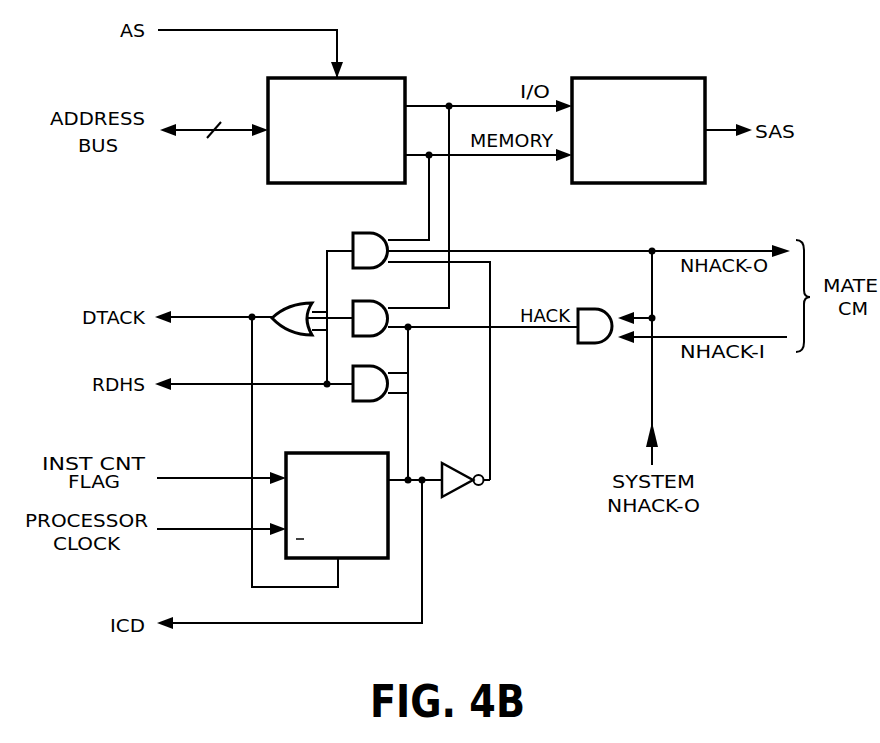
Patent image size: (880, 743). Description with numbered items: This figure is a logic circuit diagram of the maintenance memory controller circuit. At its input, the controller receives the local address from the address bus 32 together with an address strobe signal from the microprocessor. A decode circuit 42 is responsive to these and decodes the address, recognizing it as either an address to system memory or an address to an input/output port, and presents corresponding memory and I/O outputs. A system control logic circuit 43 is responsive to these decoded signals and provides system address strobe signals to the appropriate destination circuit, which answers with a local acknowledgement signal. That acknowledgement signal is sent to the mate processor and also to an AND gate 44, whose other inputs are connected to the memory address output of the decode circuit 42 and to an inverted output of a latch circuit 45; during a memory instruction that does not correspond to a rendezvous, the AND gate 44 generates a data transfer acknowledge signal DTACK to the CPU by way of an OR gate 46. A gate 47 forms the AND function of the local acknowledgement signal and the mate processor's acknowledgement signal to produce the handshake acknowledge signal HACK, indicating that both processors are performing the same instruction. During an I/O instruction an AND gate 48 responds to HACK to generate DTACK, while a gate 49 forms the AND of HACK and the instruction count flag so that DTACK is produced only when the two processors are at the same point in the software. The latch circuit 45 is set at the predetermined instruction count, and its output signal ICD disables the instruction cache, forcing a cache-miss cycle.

The address bus 32 is at (214, 141).
The decode circuit 42 is at (308, 186).
The system control logic circuit 43 is at (620, 186).
The AND gate 44 is at (355, 238).
The latch circuit 45 is at (373, 560).
The OR gate 46 is at (289, 300).
The gate 47 is at (588, 344).
The AND gate 48 is at (381, 297).
The gate 49 is at (357, 403).